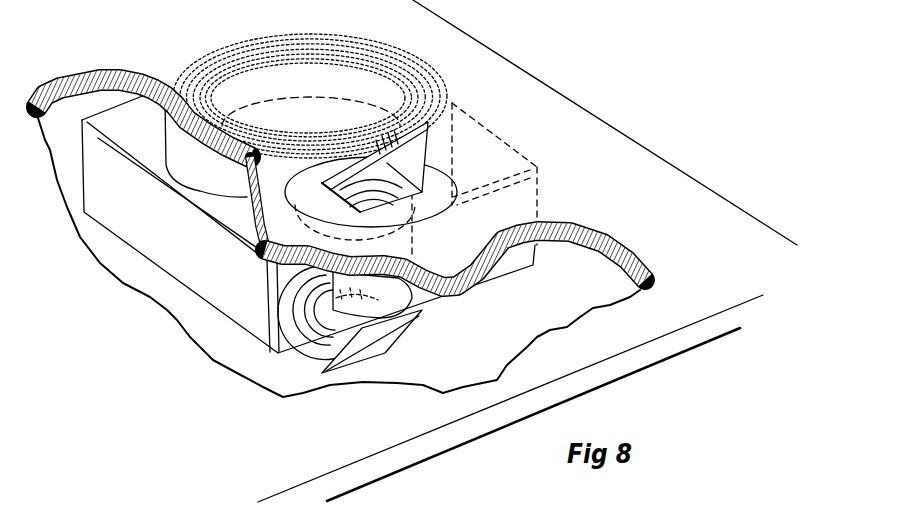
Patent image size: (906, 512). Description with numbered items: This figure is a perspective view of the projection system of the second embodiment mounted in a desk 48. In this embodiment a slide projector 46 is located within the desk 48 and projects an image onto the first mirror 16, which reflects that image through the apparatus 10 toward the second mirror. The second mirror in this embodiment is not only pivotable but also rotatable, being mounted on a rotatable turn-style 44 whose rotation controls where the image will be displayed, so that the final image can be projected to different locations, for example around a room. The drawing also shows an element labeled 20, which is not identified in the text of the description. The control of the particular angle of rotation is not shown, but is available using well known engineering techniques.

The apparatus 10 is at (434, 242).
The first mirror 16 is at (387, 338).
The upper blade plate 20 is at (452, 104).
The rotatable turn-style 44 is at (310, 203).
The slide projector 46 is at (498, 153).
The desk 48 is at (600, 157).